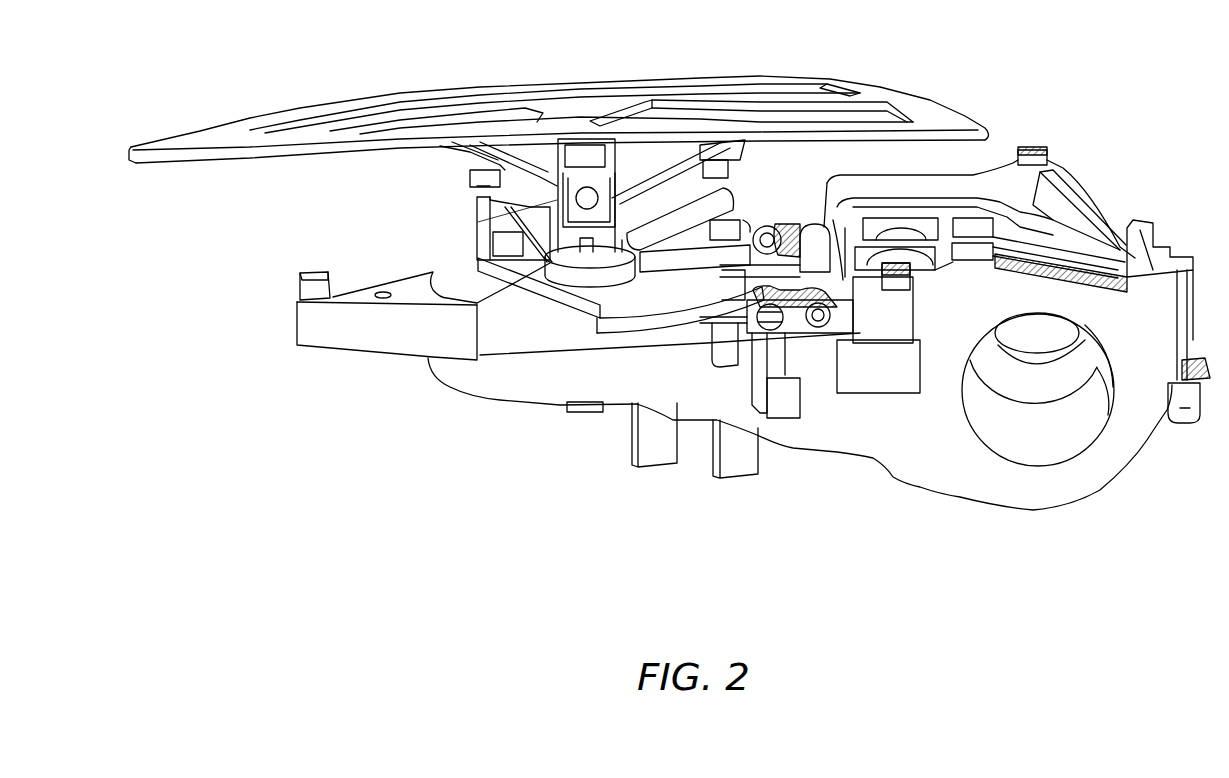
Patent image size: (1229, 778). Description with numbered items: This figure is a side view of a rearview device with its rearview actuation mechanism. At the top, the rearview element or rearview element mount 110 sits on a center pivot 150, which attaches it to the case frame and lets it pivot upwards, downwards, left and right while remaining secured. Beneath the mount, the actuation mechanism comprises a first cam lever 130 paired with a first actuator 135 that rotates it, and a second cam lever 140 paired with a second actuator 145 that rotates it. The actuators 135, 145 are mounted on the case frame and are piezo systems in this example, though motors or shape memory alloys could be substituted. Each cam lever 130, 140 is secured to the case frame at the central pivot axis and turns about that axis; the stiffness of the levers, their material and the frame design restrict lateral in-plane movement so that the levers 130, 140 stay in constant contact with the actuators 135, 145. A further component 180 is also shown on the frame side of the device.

The rearview element mount 110 is at (910, 94).
The first cam lever 130 is at (614, 330).
The first actuator 135 is at (795, 317).
The second cam lever 140 is at (680, 228).
The second actuator 145 is at (790, 220).
The center pivot 150 is at (478, 222).
The strut / brace 180 is at (1053, 213).